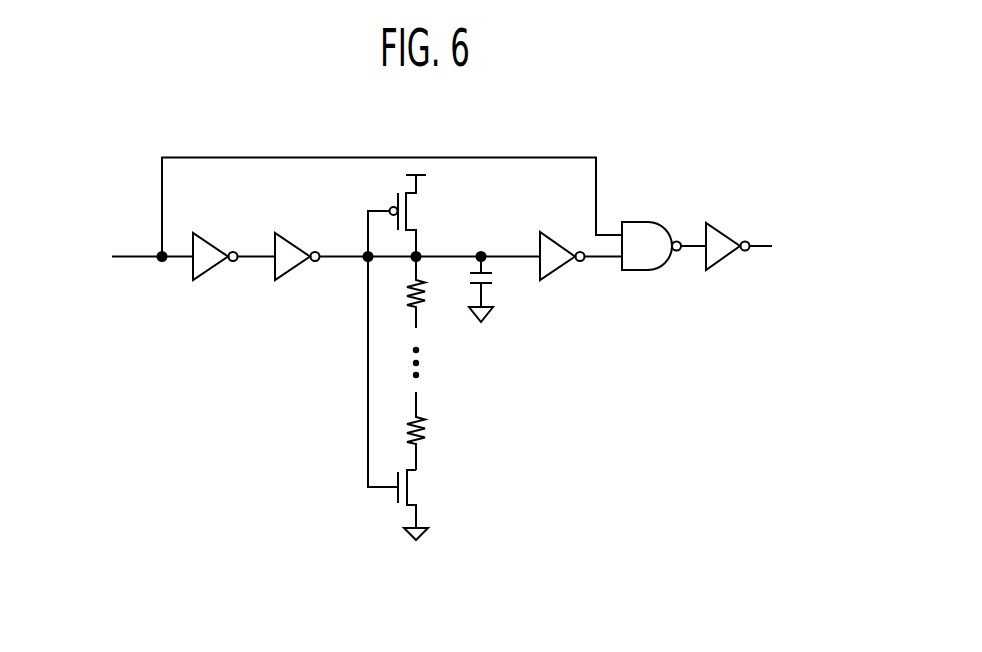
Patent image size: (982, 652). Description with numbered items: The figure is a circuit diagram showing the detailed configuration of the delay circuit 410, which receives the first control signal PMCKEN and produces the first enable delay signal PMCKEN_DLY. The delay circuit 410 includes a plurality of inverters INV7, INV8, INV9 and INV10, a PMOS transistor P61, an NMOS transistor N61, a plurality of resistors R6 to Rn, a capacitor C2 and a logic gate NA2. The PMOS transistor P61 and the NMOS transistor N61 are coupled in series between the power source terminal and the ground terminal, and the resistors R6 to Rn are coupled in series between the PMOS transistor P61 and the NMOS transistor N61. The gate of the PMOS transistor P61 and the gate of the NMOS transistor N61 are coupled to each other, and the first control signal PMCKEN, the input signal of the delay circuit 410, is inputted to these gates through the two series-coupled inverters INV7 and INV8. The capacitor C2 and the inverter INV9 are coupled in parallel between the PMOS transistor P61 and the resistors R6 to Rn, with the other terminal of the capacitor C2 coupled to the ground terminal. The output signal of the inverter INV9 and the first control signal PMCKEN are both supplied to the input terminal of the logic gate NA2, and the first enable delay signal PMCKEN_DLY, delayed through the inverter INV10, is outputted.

The delay circuit 410 is at (446, 622).
The inverter INV7 is at (215, 244).
The inverter INV8 is at (297, 244).
The inverter INV9 is at (562, 265).
The inverter INV10 is at (729, 239).
The PMOS transistor P61 is at (414, 216).
The NMOS transistor N61 is at (417, 505).
The resistor R6 is at (427, 293).
The resistor Rn is at (427, 431).
The capacitor C2 is at (493, 290).
The logic gate NA2 is at (651, 246).